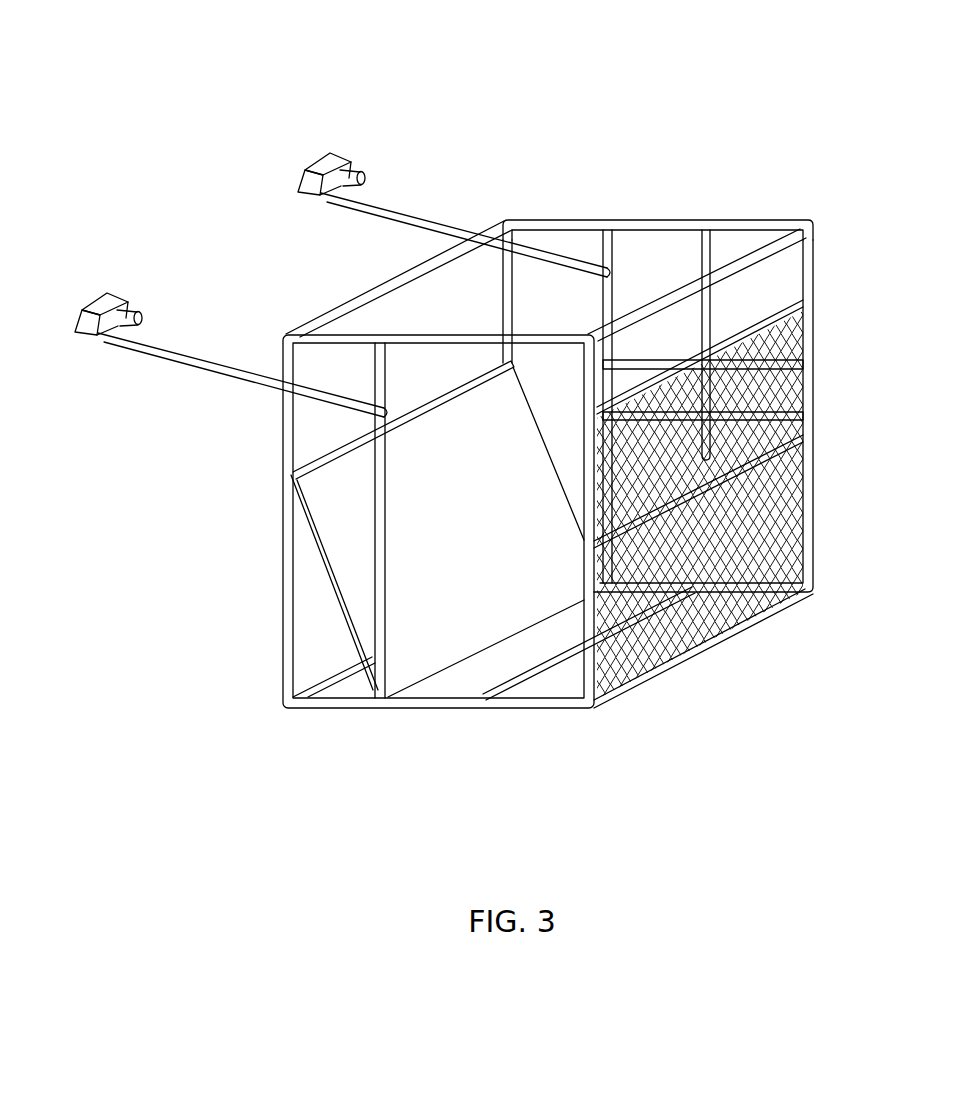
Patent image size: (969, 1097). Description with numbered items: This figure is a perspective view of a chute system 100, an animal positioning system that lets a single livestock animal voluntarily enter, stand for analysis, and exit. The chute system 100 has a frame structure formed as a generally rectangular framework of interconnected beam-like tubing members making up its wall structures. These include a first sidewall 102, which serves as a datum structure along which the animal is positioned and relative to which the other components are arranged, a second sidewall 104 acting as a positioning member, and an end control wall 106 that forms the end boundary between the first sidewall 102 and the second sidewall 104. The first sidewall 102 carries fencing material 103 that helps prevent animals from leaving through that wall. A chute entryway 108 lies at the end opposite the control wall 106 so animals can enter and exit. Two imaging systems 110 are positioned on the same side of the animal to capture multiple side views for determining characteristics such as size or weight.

The chute system 100 is at (240, 111).
The first sidewall 102 is at (815, 285).
The fencing material 103 is at (790, 474).
The second sidewall 104 is at (471, 506).
The control wall 106 is at (648, 220).
The chute entryway 108 is at (553, 671).
The imaging system 110 is at (92, 303).